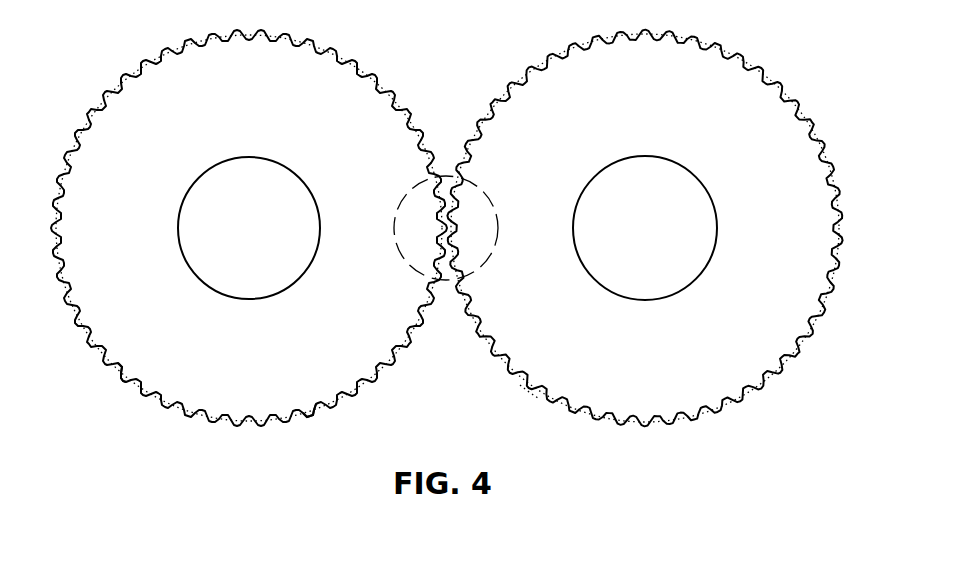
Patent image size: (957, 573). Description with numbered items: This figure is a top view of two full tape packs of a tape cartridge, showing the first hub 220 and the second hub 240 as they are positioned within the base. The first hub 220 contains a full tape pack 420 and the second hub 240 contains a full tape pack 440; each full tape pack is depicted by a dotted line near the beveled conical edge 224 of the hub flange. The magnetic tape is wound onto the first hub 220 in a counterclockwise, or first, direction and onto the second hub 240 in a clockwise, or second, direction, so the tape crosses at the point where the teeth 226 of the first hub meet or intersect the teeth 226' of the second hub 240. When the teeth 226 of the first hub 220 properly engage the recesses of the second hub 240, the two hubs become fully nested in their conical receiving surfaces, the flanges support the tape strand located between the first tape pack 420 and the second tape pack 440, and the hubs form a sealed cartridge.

The full tape pack 420 is at (317, 50).
The full tape pack 440 is at (560, 53).
The first hub 220 is at (88, 295).
The second hub 240 is at (783, 348).
The beveled conical edge 224 is at (120, 377).
The teeth 226 is at (323, 435).
The teeth 226' is at (515, 409).